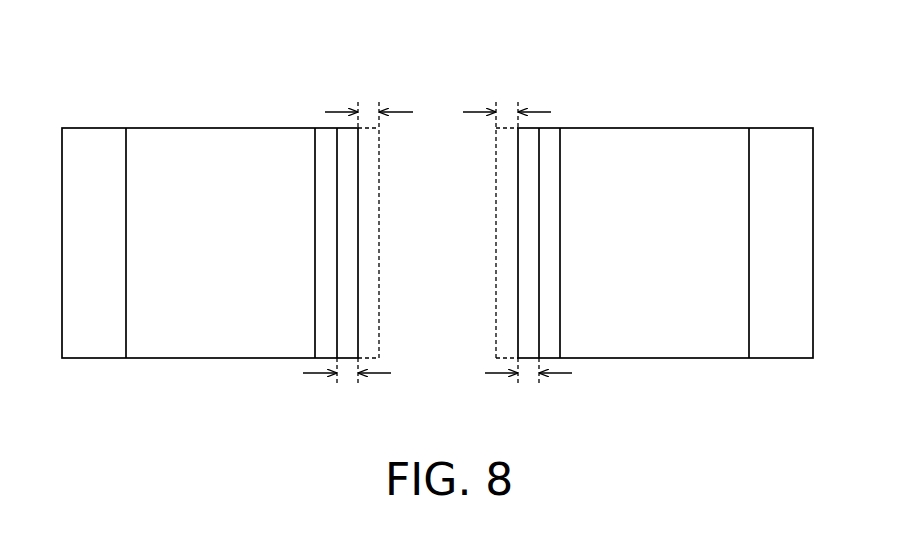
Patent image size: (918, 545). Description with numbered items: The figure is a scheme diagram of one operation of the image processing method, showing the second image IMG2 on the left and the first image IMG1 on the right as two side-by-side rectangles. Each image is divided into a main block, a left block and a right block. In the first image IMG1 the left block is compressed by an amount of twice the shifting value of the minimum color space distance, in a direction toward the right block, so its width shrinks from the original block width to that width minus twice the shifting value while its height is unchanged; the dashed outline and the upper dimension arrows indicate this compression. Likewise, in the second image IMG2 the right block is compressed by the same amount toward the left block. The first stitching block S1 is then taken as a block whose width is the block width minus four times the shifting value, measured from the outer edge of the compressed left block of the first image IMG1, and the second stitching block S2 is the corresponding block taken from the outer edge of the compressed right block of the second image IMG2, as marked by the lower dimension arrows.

The second image IMG2 is at (220, 128).
The second stitching block S2 is at (345, 150).
The first image IMG1 is at (650, 128).
The first stitching block S1 is at (528, 152).